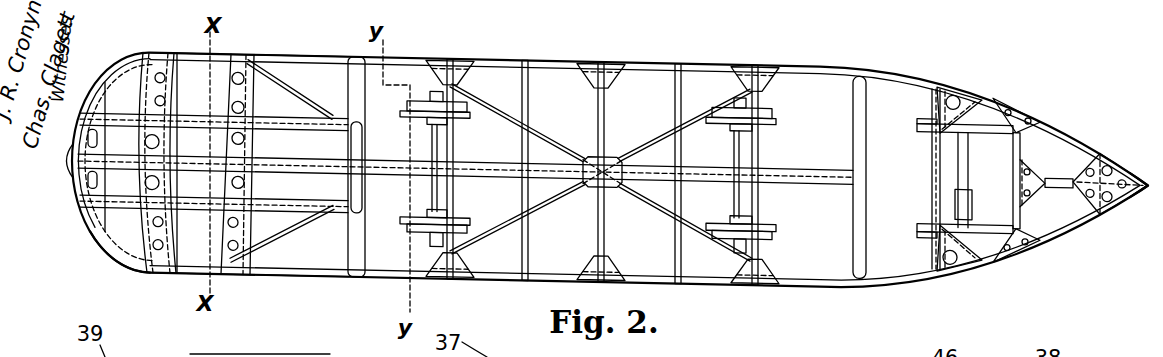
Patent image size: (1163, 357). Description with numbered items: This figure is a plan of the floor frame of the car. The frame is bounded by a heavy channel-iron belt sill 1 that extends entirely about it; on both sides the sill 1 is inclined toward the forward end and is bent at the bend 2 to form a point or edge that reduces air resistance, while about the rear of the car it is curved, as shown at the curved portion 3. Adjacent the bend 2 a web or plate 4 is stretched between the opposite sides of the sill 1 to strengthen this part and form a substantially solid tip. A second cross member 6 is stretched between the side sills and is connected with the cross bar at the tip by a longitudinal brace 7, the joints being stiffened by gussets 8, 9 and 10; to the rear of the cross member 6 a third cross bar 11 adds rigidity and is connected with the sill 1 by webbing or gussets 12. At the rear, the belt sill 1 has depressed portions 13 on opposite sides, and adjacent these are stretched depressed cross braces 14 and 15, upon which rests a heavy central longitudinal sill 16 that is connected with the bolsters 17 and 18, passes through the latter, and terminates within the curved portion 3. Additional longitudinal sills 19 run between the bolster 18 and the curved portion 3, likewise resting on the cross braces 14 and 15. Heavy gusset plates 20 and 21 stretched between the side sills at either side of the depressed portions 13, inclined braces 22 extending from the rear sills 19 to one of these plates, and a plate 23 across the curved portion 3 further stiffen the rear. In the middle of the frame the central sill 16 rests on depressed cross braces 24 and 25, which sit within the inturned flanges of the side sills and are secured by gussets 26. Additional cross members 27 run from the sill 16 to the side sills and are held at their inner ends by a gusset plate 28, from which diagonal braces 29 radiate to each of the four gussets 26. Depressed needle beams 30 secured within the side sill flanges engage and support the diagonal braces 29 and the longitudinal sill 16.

The sill 1 is at (885, 70).
The bend 2 is at (1143, 192).
The curved portion 3 is at (105, 246).
The web or plate 4 is at (1110, 162).
The second cross member 6 is at (1022, 215).
The longitudinal brace 7 is at (1053, 178).
The gusset 8 is at (1020, 103).
The gusset 9 is at (1015, 183).
The gusset 10 is at (1017, 257).
The third cross bar 11 is at (935, 167).
The gussets 12 is at (968, 88).
The depressed portions 13 is at (192, 52).
The depressed cross brace 14 is at (177, 89).
The depressed cross brace 15 is at (226, 213).
The central longitudinal sill 16 is at (375, 163).
The bolster 17 is at (847, 142).
The bolster 18 is at (357, 220).
The longitudinal sills 19 is at (188, 123).
The gusset plate 20 is at (150, 90).
The gusset plate 21 is at (246, 236).
The inclined braces 22 is at (270, 83).
The plate 23 is at (85, 192).
The depressed cross brace 24 is at (448, 153).
The depressed cross brace 25 is at (753, 162).
The gussets 26 is at (447, 62).
The cross members 27 is at (597, 128).
The gusset plate 28 is at (605, 160).
The diagonal braces 29 is at (493, 82).
The needle beams 30 is at (520, 197).